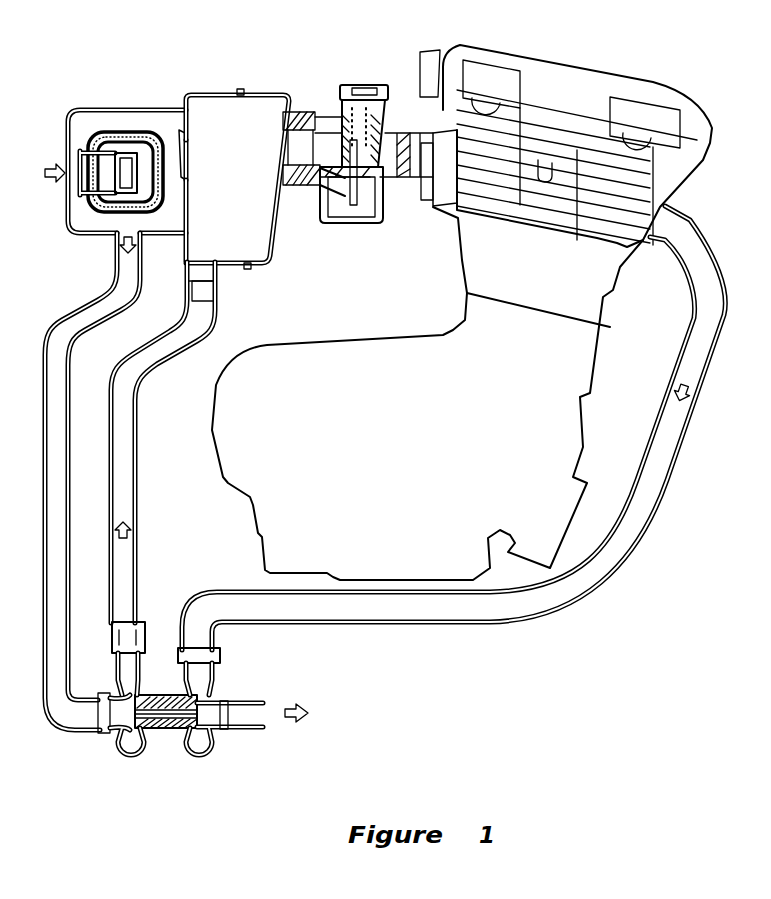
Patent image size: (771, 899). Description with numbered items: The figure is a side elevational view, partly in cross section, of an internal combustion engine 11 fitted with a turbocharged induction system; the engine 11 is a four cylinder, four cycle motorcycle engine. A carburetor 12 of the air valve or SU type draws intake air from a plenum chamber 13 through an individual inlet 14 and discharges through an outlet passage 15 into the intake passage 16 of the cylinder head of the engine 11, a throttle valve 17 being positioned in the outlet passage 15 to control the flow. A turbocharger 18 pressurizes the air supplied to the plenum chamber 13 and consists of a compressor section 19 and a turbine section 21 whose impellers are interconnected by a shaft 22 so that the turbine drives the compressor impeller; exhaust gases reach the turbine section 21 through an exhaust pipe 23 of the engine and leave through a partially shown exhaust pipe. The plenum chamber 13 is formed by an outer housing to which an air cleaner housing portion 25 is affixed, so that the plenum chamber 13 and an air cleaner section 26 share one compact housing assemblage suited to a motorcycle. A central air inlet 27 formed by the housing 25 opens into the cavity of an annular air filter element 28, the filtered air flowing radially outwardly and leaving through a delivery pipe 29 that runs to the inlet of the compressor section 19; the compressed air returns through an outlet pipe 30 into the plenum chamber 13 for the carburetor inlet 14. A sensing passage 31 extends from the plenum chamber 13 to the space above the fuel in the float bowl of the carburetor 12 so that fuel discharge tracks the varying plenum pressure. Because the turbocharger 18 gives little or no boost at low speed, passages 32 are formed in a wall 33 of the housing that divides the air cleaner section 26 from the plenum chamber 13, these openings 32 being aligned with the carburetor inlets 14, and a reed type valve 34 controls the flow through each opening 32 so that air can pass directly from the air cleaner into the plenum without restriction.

The internal combustion engine 11 is at (467, 556).
The carburetor 12 is at (367, 85).
The plenum chamber 13 is at (217, 93).
The inlet 14 is at (310, 137).
The outlet passage 15 is at (403, 168).
The intake passage 16 is at (428, 120).
The throttle valve 17 is at (395, 110).
The turbocharger 18 is at (177, 762).
The compressor section 19 is at (118, 762).
The turbine section 21 is at (208, 768).
The shaft 22 is at (165, 716).
The exhaust pipe 23 is at (655, 522).
The air cleaner housing portion 25 is at (118, 110).
The air cleaner section 26 is at (108, 130).
The central air inlet 27 is at (80, 150).
The annular air filter element 28 is at (117, 150).
The delivery pipe 29 is at (44, 583).
The outlet pipe 30 is at (137, 473).
The sensing passage 31 is at (302, 197).
The passage 32 is at (180, 158).
The wall 33 is at (188, 220).
The reed type valve 34 is at (197, 158).